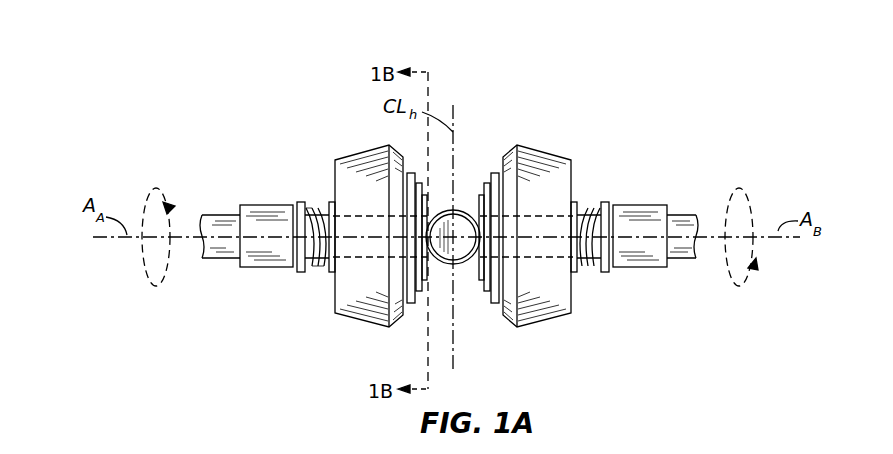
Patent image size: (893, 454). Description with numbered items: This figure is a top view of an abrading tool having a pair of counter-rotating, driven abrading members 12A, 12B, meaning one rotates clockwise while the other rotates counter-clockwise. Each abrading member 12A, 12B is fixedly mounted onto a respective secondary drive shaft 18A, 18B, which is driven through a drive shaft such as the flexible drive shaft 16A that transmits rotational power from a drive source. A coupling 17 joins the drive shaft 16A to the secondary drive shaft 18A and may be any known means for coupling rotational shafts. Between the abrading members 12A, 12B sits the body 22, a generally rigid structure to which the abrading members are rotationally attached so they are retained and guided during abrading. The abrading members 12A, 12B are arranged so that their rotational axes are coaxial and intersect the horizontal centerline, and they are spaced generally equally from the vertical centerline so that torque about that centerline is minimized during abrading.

The abrading member 12A is at (357, 150).
The abrading member 12B is at (548, 150).
The drive shaft 16A is at (213, 215).
The coupling 17 is at (272, 211).
The secondary drive shaft 18A is at (323, 262).
The secondary drive shaft 18B is at (583, 262).
The body 22 is at (460, 207).